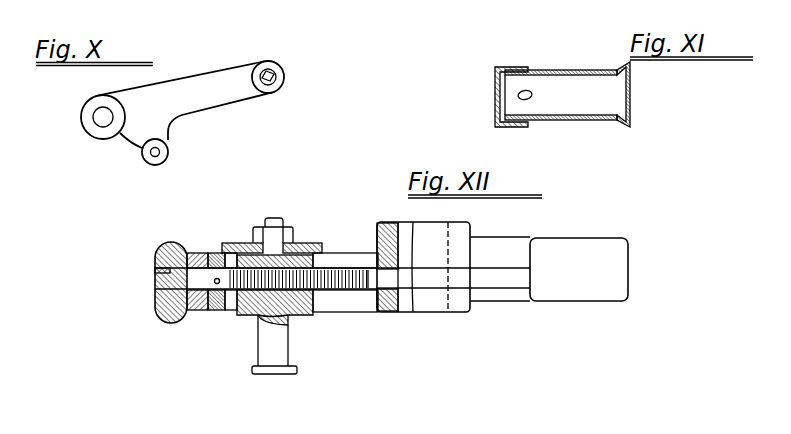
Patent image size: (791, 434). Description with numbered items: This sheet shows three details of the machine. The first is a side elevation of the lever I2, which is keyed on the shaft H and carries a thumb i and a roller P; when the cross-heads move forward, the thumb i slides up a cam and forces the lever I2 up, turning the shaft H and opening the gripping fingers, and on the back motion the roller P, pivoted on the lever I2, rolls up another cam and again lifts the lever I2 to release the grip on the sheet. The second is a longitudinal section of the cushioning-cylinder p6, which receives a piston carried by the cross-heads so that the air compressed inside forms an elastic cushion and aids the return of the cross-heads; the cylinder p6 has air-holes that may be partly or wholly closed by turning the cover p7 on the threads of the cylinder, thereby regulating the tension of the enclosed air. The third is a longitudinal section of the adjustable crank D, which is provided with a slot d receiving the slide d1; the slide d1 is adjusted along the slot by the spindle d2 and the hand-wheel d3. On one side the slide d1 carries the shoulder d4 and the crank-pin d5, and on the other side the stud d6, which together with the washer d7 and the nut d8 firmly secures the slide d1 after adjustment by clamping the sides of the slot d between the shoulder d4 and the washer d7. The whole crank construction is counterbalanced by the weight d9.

In FIG. 10, the shaft H is at (98, 117).
In FIG. 10, the lever I2 is at (197, 78).
In FIG. 10, the thumb i is at (274, 68).
In FIG. 10, the roller P is at (168, 152).
In FIG. 11, the cylinder p6 is at (578, 70).
In FIG. 11, the cover p7 is at (497, 79).
In FIG. 12, the slot d is at (367, 253).
In FIG. 12, the slide d1 is at (313, 256).
In FIG. 12, the spindle d2 is at (229, 310).
In FIG. 12, the hand-wheel d3 is at (165, 320).
In FIG. 12, the shoulder d4 is at (311, 316).
In FIG. 12, the crank-pin d5 is at (289, 357).
In FIG. 12, the stud d6 is at (278, 218).
In FIG. 12, the washer d7 is at (238, 247).
In FIG. 12, the nut d8 is at (293, 236).
In FIG. 12, the weight d9 is at (592, 234).
In FIG. 12, the adjustable crank D is at (353, 302).